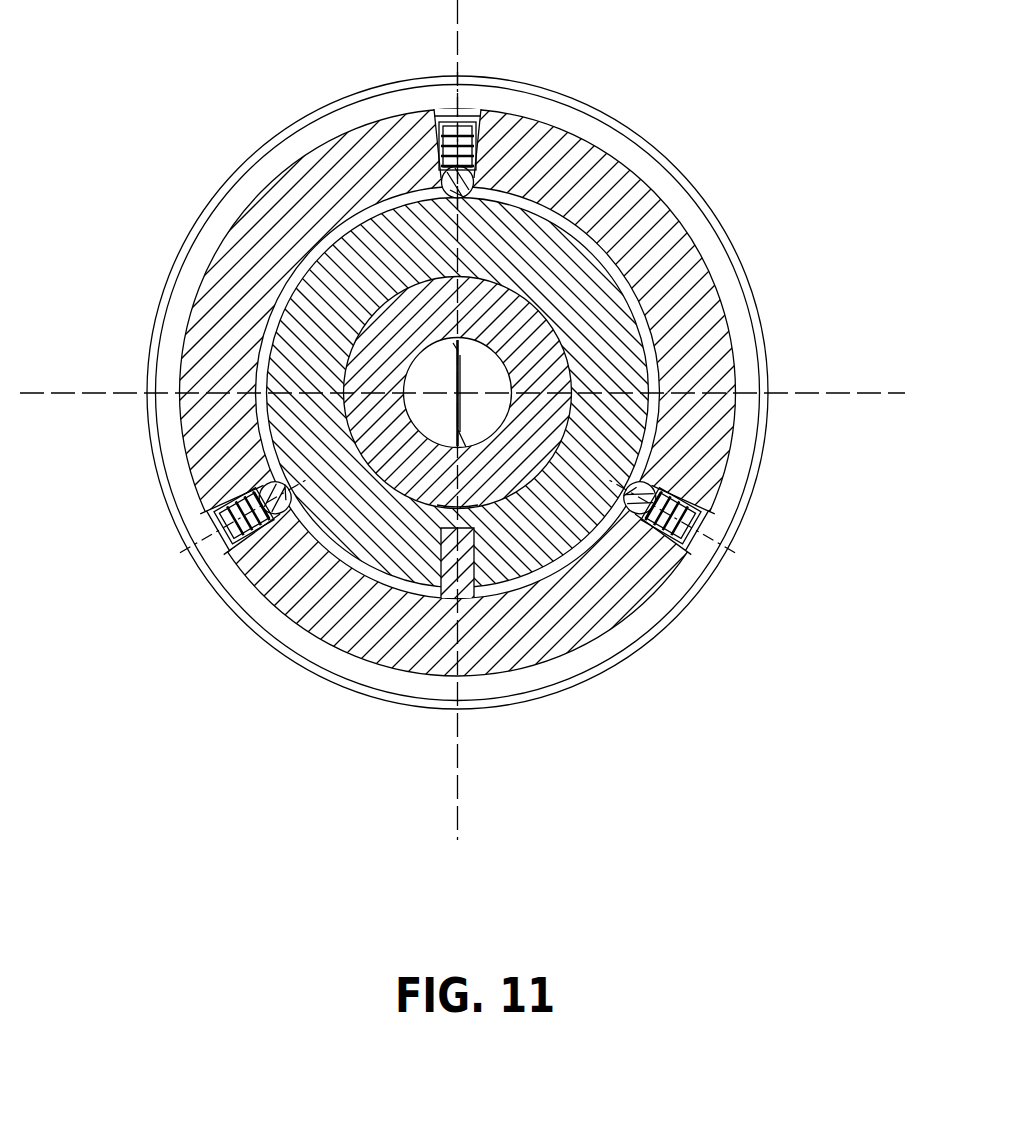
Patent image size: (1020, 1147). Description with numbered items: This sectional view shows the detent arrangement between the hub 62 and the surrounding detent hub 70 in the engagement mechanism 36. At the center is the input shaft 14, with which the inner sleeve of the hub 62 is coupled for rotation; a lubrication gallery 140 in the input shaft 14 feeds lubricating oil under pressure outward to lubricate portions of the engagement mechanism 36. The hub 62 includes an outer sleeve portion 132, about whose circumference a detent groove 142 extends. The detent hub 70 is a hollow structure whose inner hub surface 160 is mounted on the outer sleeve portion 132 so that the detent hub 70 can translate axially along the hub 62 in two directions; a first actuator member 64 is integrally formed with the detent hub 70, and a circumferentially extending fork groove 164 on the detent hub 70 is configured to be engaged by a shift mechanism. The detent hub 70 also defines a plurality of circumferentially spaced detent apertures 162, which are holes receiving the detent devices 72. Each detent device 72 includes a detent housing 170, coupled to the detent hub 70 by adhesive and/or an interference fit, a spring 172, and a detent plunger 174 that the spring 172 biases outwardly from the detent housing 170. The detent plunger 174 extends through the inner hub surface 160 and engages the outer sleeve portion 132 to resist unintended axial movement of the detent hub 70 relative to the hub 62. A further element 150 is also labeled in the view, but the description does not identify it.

The input shaft 14 is at (557, 370).
The engagement mechanism 36 is at (645, 148).
The hub 62 is at (598, 455).
The first actuator member 64 is at (461, 583).
The detent hub 70 is at (378, 647).
The detent device 72 is at (243, 503).
The outer sleeve portion 132 is at (583, 260).
The lubrication gallery 140 is at (500, 367).
The detent groove 142 is at (523, 200).
The slot 150 is at (466, 512).
The inner hub surface 160 is at (307, 570).
The detent apertures 162 is at (215, 520).
The fork groove 164 is at (487, 98).
The detent housing 170 is at (702, 487).
The spring 172 is at (682, 525).
The detent plunger 174 is at (637, 513).